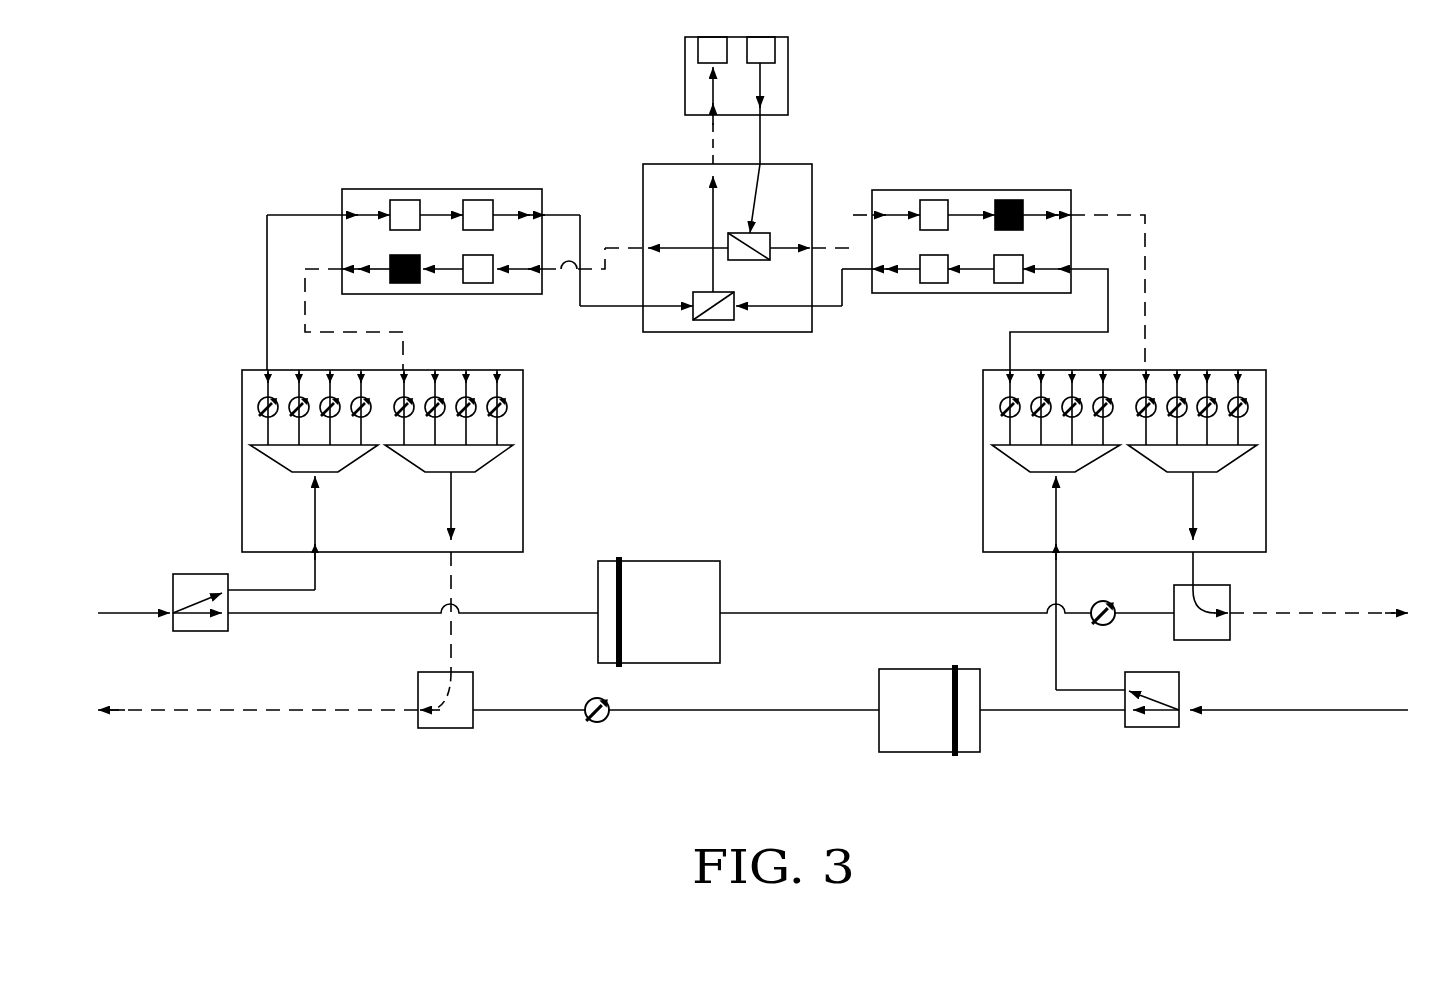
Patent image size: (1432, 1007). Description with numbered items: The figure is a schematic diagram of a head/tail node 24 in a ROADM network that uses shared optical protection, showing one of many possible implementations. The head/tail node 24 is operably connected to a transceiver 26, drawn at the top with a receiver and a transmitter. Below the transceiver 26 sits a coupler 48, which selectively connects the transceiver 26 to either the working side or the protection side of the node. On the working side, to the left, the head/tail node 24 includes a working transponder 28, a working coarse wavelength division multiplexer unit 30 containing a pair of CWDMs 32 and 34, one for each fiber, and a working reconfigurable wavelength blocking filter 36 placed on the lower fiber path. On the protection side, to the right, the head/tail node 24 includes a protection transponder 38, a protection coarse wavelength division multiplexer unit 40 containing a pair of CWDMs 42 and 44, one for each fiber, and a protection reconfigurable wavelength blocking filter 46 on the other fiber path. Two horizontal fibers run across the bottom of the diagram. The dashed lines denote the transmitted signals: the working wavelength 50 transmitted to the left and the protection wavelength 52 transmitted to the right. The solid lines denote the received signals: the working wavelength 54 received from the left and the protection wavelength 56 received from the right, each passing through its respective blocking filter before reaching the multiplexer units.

The head/tail node 24 is at (450, 90).
The transceiver 26 is at (788, 67).
The working transponder 28 is at (522, 185).
The working coarse wavelength division multiplexer unit 30 is at (362, 521).
The CWDM 32 is at (275, 462).
The CWDM 34 is at (507, 455).
The working reconfigurable wavelength blocking filter 36 is at (720, 580).
The protection transponder 38 is at (1071, 193).
The protection coarse wavelength division multiplexer unit 40 is at (1154, 530).
The CWDM 42 is at (1225, 460).
The CWDM 44 is at (1018, 460).
The protection reconfigurable wavelength blocking filter 46 is at (879, 740).
The coupler 48 is at (650, 164).
The working wavelength 50 is at (185, 711).
The protection wavelength 52 is at (1345, 612).
The working wavelength 54 is at (340, 615).
The protection wavelength 56 is at (1366, 712).